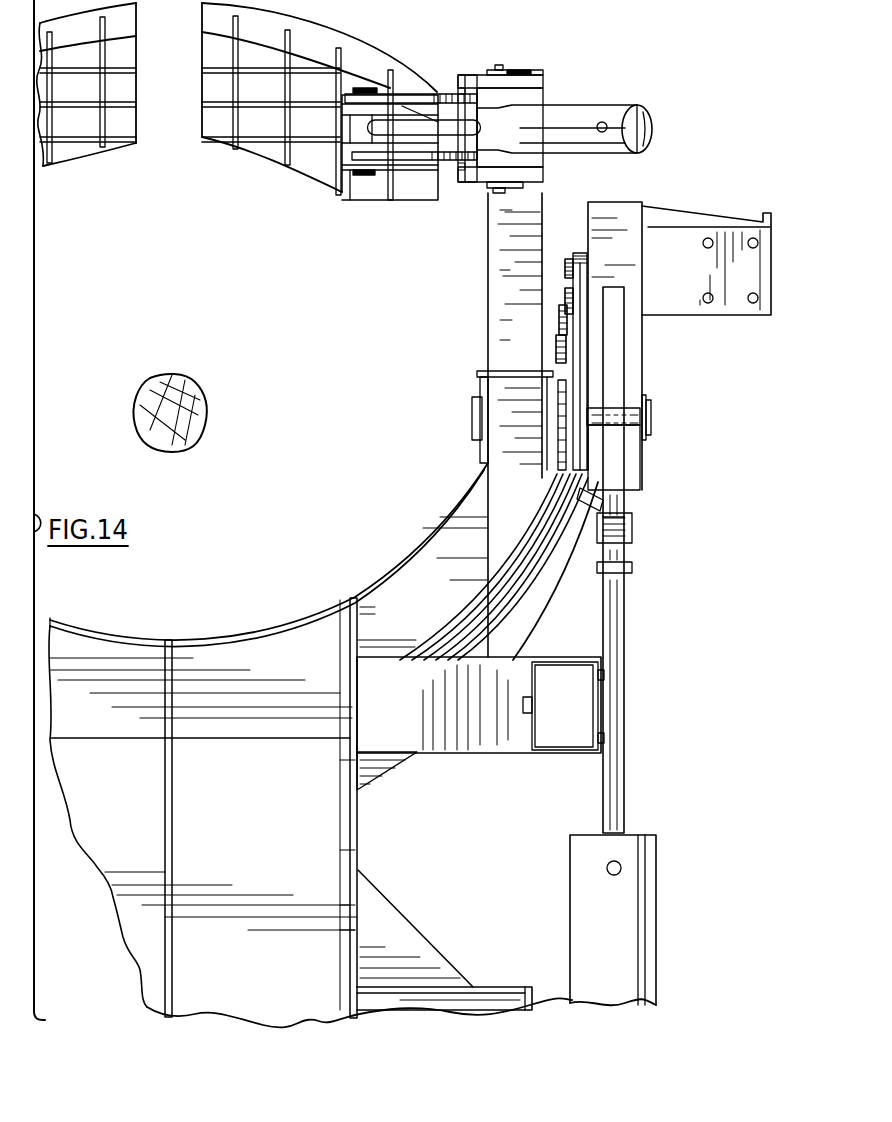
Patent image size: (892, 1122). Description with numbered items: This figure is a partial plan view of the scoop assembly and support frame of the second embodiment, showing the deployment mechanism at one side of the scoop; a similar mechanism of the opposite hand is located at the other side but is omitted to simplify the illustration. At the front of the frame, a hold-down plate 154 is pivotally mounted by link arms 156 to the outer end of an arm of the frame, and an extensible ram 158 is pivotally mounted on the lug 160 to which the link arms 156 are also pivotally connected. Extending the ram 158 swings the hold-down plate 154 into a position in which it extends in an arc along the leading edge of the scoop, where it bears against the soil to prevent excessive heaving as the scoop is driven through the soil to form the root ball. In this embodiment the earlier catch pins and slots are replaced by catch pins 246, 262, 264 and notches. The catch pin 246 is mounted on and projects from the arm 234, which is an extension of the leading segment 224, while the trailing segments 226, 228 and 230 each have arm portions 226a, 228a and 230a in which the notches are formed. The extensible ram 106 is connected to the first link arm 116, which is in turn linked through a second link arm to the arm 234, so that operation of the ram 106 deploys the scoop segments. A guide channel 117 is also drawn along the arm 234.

The extensible ram 106 is at (640, 838).
The first link arm 116 is at (618, 648).
The guide channel 117 is at (617, 355).
The hold-down plate 154 is at (312, 160).
The link arm 156 is at (445, 90).
The extensible ram 158 is at (570, 110).
The lug 160 is at (482, 78).
The leading segment 224 is at (530, 613).
The trailing segment 226 is at (452, 641).
The arm portion 226a is at (578, 253).
The trailing segment 228 is at (478, 612).
The arm portion 228a is at (565, 288).
The trailing segment 230 is at (533, 531).
The arm portion 230a is at (558, 352).
The arm 234 is at (595, 203).
The catch pin 246 is at (566, 268).
The catch pin 262 is at (560, 305).
The catch pin 264 is at (558, 340).